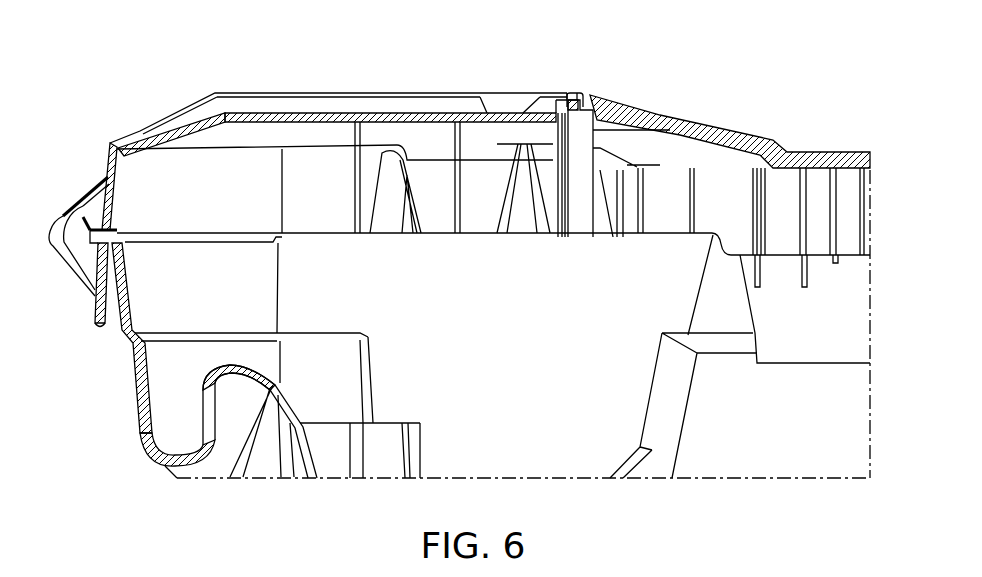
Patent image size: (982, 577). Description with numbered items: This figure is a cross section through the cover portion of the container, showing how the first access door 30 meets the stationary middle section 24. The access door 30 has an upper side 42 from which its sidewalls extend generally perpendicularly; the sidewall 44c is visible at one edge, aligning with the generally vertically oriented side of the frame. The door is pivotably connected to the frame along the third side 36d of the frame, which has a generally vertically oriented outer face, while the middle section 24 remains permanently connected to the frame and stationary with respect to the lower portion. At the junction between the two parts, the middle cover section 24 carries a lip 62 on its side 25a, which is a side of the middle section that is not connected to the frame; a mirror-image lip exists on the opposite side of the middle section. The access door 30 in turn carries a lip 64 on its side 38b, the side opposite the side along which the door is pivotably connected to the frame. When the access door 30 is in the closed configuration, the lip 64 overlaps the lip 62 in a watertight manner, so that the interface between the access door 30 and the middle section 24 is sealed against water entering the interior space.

The first access door 30 is at (178, 112).
The upper side 42 is at (370, 116).
The lip 64 is at (583, 97).
The side 38b is at (593, 98).
The middle section 24 is at (813, 143).
The sidewall 44c is at (108, 173).
The third side 36d is at (93, 298).
The side 25a is at (562, 113).
The lip 62 is at (568, 105).